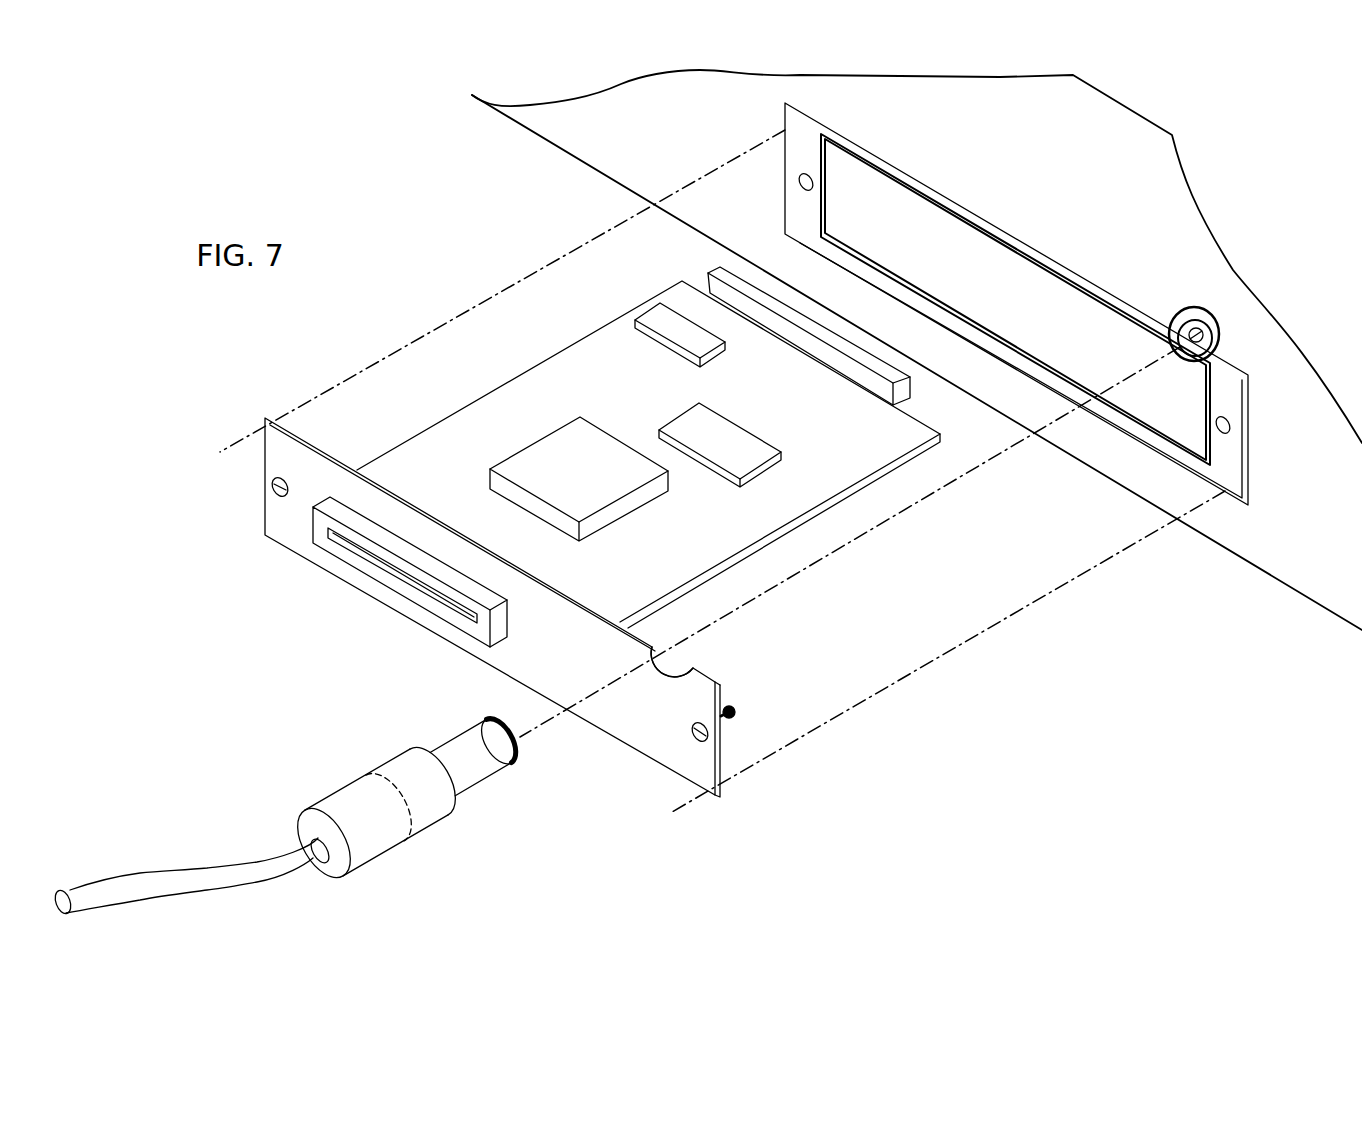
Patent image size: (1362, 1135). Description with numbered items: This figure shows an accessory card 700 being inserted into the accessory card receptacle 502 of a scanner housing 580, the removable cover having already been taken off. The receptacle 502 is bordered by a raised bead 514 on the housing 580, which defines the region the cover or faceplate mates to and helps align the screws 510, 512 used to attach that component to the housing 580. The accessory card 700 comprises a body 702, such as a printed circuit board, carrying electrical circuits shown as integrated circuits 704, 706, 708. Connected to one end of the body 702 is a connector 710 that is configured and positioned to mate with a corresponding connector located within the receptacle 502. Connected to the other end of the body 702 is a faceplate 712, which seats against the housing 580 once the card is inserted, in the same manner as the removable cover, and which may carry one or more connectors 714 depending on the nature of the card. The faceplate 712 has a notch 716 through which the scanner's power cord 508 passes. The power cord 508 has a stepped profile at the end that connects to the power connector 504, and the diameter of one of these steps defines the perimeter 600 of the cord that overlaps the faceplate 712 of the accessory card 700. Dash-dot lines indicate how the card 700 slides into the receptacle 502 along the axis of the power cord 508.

The housing 580 is at (483, 99).
The accessory card receptacle 502 is at (1016, 304).
The raised bead 514 is at (889, 164).
The power connector 504 is at (1193, 362).
The screw 510 is at (265, 498).
The screw 512 is at (733, 720).
The accessory card 700 is at (559, 537).
The body 702 is at (527, 371).
The integrated circuit 704 is at (639, 510).
The integrated circuit 706 is at (725, 479).
The integrated circuit 708 is at (717, 355).
The connector 710 is at (707, 267).
The faceplate 712 is at (472, 607).
The connector 714 is at (375, 582).
The notch 716 is at (672, 663).
The perimeter 600 is at (375, 783).
The power cord 508 is at (265, 884).